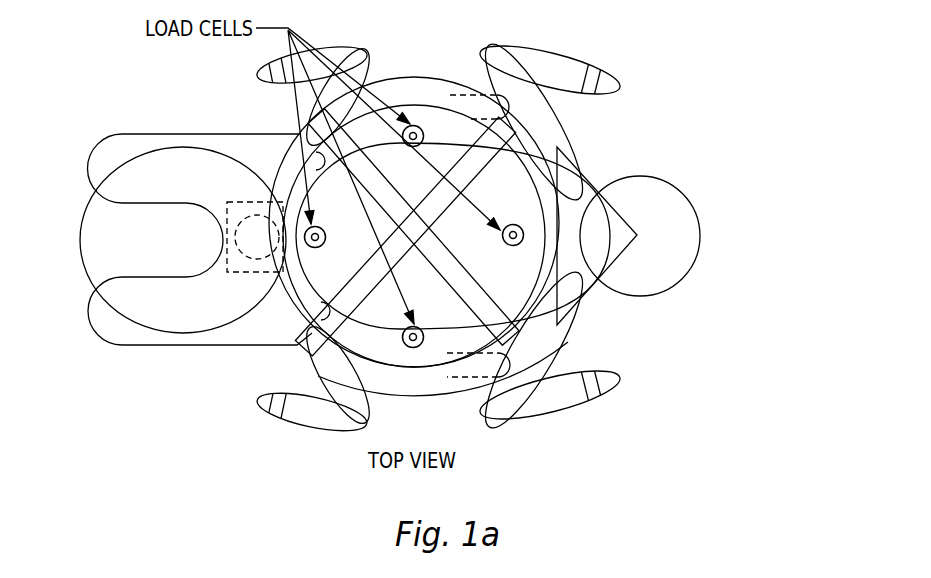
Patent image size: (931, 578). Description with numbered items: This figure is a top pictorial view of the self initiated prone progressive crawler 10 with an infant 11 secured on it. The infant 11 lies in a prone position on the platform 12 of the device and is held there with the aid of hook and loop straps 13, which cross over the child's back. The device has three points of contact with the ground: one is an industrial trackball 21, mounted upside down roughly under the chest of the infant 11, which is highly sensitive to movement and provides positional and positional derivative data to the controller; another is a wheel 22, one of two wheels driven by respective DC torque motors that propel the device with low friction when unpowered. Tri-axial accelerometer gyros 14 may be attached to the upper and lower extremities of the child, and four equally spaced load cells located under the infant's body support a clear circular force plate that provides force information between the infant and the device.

The self initiated prone progressive crawler 10 is at (117, 91).
The infant 11 is at (503, 273).
The platform 12 is at (683, 238).
The hook and loop straps 13 is at (497, 150).
The tri-axial accelerometer gyros 14 is at (274, 77).
The industrial trackball 21 is at (261, 238).
The wheel 22 is at (480, 378).